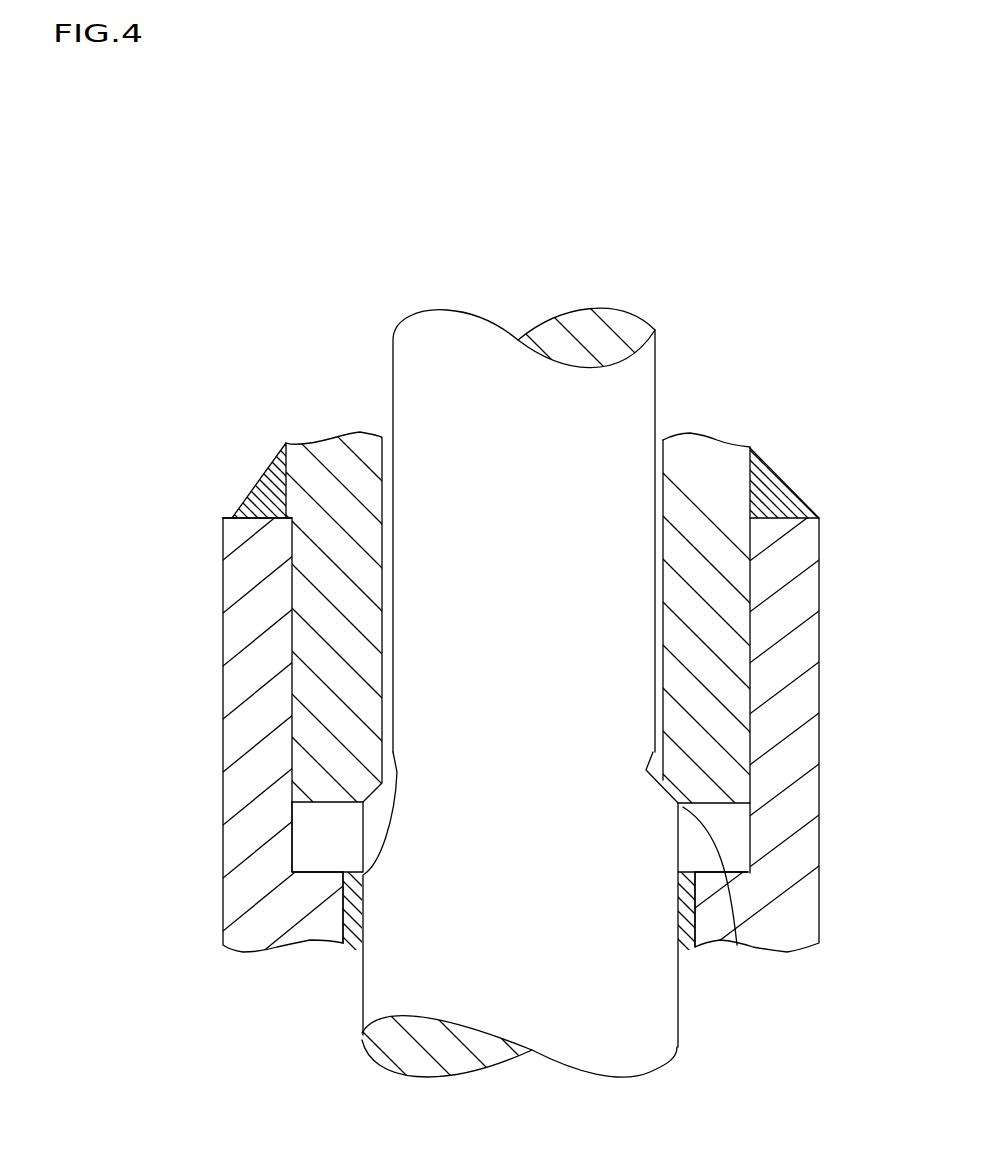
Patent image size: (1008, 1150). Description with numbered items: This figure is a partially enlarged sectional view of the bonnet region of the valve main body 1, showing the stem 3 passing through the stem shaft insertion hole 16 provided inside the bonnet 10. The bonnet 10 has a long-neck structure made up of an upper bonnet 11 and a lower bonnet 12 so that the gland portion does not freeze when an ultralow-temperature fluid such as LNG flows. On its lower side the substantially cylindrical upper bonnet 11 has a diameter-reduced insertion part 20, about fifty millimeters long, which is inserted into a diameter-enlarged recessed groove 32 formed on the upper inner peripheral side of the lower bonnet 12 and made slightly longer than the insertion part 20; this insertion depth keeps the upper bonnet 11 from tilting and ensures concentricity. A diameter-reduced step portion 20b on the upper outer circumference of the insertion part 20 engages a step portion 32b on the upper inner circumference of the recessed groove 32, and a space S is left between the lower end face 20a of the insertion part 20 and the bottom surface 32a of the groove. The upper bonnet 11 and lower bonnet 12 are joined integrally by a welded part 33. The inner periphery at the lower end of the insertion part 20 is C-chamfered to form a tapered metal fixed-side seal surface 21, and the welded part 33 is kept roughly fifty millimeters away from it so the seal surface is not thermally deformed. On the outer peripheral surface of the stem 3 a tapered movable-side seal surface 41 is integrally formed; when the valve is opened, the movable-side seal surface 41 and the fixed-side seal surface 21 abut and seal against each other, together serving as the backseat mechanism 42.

The valve main body 1 is at (822, 718).
The stem 3 is at (467, 392).
The bonnet 10 is at (260, 663).
The upper bonnet 11 is at (333, 577).
The lower bonnet 12 is at (265, 661).
The stem shaft insertion hole 16 is at (663, 578).
The insertion part 20 is at (260, 723).
The lower end face of the insertion part 20a is at (318, 803).
The diameter-reduced step portion 20b is at (290, 519).
The fixed-side seal surface 21 is at (330, 937).
The diameter-enlarged recessed groove 32 is at (748, 608).
The bottom surface of the diameter-enlarged recessed groove 32a is at (737, 870).
The step portion 32b is at (752, 508).
The welded part 33 is at (280, 606).
The movable-side seal surface 41 is at (677, 792).
The backseat mechanism 42 is at (704, 926).